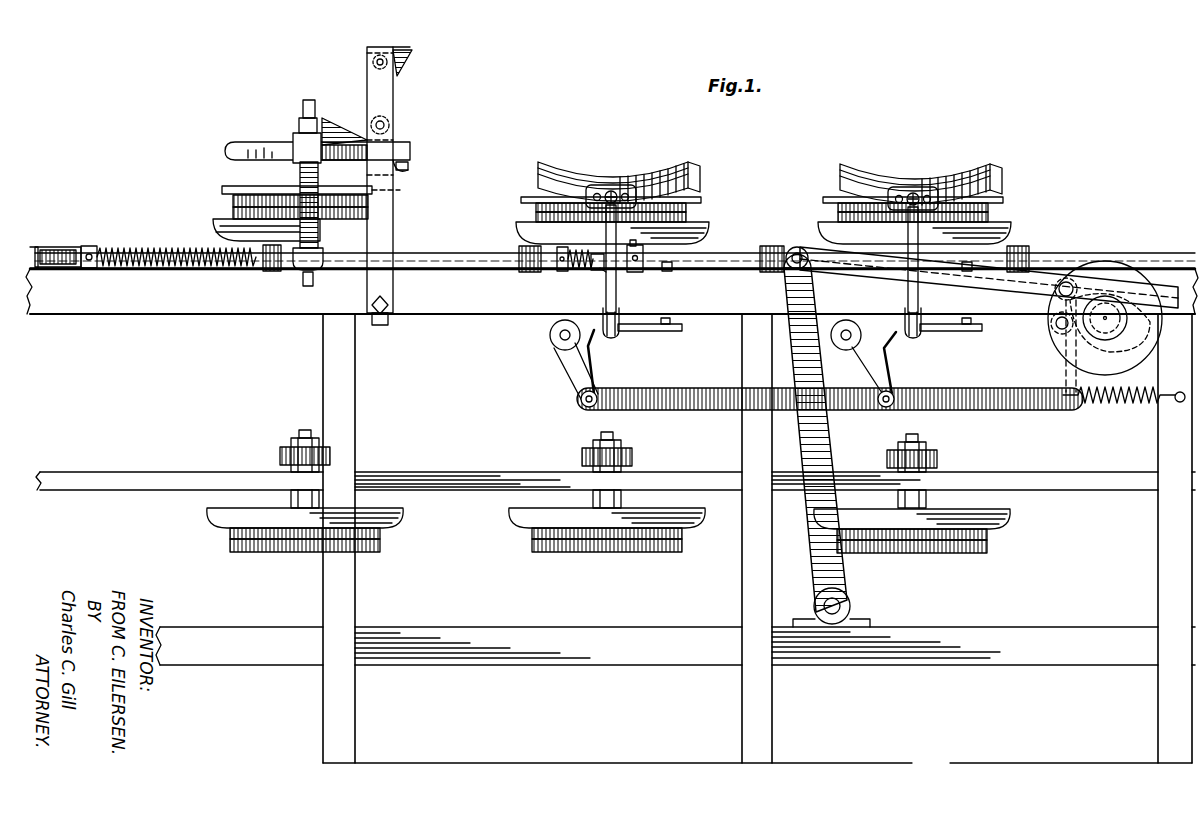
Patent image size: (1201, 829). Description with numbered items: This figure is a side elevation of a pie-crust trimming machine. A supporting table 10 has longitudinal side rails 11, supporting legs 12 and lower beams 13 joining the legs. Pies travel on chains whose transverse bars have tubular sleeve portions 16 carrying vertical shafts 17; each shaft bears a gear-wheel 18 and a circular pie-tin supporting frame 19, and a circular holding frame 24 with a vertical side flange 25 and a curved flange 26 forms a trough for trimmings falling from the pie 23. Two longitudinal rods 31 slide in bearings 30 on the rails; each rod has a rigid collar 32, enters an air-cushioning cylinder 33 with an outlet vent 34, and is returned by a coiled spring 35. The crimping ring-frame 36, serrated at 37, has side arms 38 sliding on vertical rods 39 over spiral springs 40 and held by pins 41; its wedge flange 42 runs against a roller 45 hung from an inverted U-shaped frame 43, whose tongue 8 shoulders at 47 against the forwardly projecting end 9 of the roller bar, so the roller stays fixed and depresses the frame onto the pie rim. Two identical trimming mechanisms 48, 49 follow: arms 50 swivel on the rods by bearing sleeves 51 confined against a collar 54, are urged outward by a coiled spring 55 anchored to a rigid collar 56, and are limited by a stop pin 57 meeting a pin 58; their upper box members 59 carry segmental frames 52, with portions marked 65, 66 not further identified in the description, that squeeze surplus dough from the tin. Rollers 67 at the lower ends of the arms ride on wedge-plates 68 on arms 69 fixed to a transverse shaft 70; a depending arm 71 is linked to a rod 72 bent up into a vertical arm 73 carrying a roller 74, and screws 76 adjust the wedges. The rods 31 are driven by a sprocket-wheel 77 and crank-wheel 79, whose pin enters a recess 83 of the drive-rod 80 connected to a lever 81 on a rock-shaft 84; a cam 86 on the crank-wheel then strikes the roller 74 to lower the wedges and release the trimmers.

The tongue 8 is at (402, 48).
The upper forwardly projecting end 9 is at (402, 66).
The supporting table 10 is at (612, 307).
The longitudinal side rails 11 is at (612, 285).
The supporting legs 12 is at (347, 593).
The lower beams 13 is at (675, 646).
The central tubular sleeve portions 16 is at (292, 492).
The vertical shafts 17 is at (312, 420).
The gear-wheels 18 is at (280, 457).
The circular pie-tin supporting frames 19 is at (382, 546).
The pie 23 is at (260, 186).
The circular holding frames 24 is at (385, 500).
The vertical circular side flange 25 is at (382, 534).
The downwardly and inwardly curved flange 26 is at (214, 510).
The bearings 30 is at (275, 272).
The longitudinal rods 31 is at (455, 245).
The rigid collars 32 is at (95, 247).
The air-cushioning cylinders 33 is at (62, 247).
The outlet vent 34 is at (32, 256).
The coiled springs 35 is at (180, 252).
The ring-frame 36 is at (230, 156).
The serrations 37 is at (410, 169).
The side arms 38 is at (293, 145).
The vertical rods 39 is at (308, 100).
The spiral springs 40 is at (300, 175).
The pins 41 is at (299, 125).
The vertical wedge flange 42 is at (352, 134).
The inverted U-shaped frame 43 is at (366, 186).
The roller 45 is at (393, 128).
The shoulder 47 is at (400, 58).
The first pie-crust trimming mechanism 48 is at (650, 156).
The second pie-crust trimming mechanism 49 is at (941, 168).
The arms 50 is at (618, 295).
The bearing sleeves 51 is at (597, 270).
The segmental frames 52 is at (692, 166).
The collar 54 is at (645, 270).
The coiled spring 55 is at (572, 272).
The rigid collar 56 is at (556, 268).
The stop pin 57 is at (640, 246).
The pin 58 is at (606, 278).
The horizontal box members 59 is at (600, 188).
The band 65 is at (538, 176).
The flange 66 is at (565, 158).
The rollers 67 is at (620, 336).
The wedge-plates 68 is at (645, 331).
The arms 69 is at (596, 340).
The transverse shaft 70 is at (552, 338).
The depending arm 71 is at (576, 370).
The rod 72 is at (710, 390).
The vertical arm 73 is at (1062, 380).
The roller 74 is at (1058, 327).
The screws 76 is at (676, 314).
The sprocket-wheel 77 is at (893, 380).
The crank-wheel 79 is at (1130, 268).
The drive-rod 80 is at (1012, 290).
The lever 81 is at (838, 577).
The recess 83 is at (1072, 282).
The rock-shaft 84 is at (850, 606).
The cam 86 is at (1112, 345).